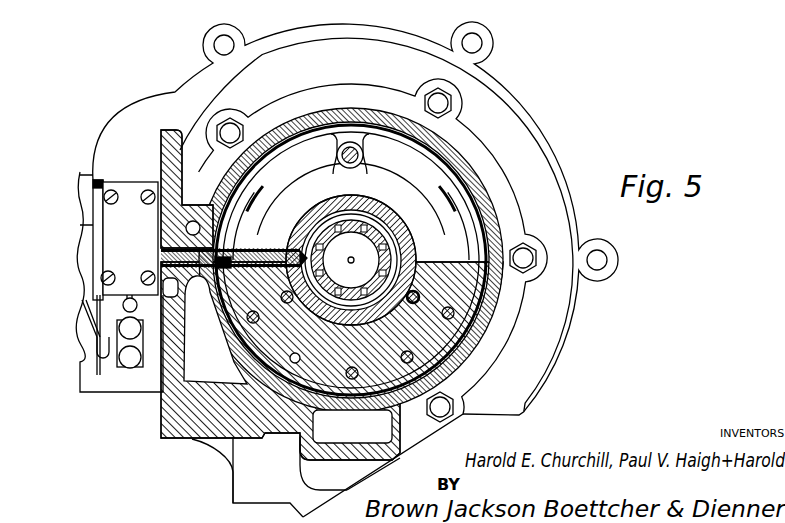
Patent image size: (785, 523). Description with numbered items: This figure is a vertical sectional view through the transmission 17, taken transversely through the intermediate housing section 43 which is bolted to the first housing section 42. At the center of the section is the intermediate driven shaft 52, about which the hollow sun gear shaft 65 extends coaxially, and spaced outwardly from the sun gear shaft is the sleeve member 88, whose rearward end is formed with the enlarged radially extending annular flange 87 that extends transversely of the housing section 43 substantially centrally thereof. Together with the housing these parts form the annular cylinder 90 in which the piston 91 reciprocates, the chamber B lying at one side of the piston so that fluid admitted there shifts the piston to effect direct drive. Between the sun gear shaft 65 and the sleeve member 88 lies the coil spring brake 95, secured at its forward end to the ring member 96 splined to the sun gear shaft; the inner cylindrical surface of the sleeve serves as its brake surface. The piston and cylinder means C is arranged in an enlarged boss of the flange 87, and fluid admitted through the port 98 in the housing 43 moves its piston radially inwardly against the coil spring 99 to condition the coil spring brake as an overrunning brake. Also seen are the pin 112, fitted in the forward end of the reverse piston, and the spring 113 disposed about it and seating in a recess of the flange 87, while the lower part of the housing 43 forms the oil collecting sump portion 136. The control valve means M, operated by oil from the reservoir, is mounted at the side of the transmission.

The transmission 17 is at (500, 90).
The first housing section 42 is at (520, 123).
The intermediate housing section 43 is at (464, 157).
The annular cylinder 90 is at (432, 148).
The piston 91 is at (281, 147).
The coil spring brake 95 is at (324, 200).
The intermediate driven shaft 52 is at (370, 203).
The sun gear shaft 65 is at (382, 222).
The sleeve member 88 is at (368, 193).
The annular flange 87 is at (463, 224).
The ring member 96 is at (262, 217).
The coil spring 99 is at (268, 235).
The port 98 is at (153, 247).
The pin 112 is at (277, 316).
The spring 113 is at (281, 333).
The sump portion 136 is at (303, 443).
The pressure chamber B is at (500, 208).
The piston and cylinder means C is at (283, 300).
The control valve means M is at (122, 390).